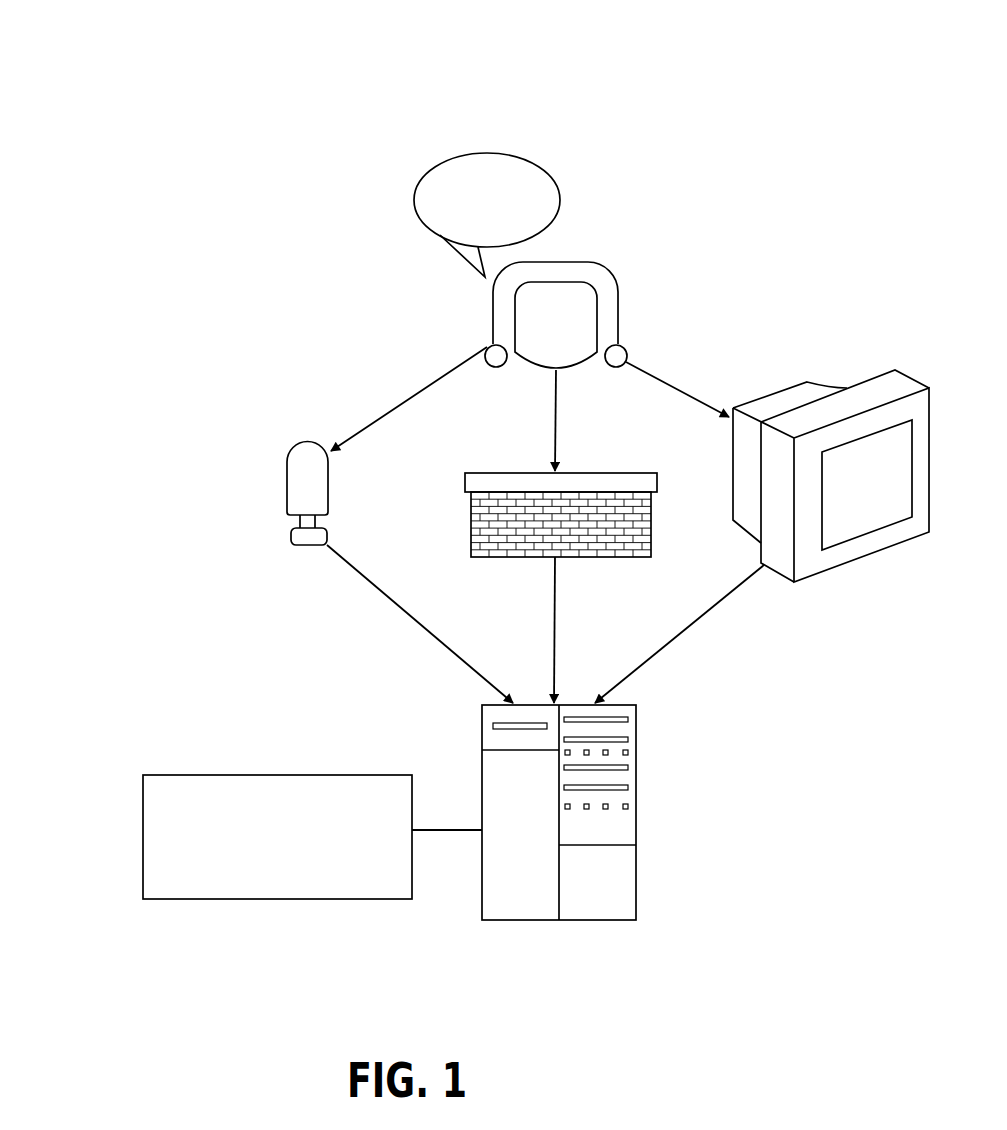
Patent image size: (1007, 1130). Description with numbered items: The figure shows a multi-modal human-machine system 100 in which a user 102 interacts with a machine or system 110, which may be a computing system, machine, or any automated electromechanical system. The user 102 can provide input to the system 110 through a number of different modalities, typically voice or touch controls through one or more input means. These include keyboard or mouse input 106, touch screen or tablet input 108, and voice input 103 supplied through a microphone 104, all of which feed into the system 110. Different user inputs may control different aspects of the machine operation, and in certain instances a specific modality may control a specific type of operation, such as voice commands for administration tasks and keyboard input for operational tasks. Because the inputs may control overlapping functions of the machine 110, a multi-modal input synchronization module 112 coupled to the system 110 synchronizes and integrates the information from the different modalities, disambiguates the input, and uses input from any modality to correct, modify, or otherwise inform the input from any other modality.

The system 100 is at (54, 30).
The user 102 is at (583, 312).
The voice input 103 is at (508, 214).
The microphone 104 is at (271, 494).
The keyboard or mouse input 106 is at (561, 535).
The touch screen or tablet input 108 is at (894, 492).
The machine or system 110 is at (599, 812).
The multi-modal input synchronization module 112 is at (372, 882).